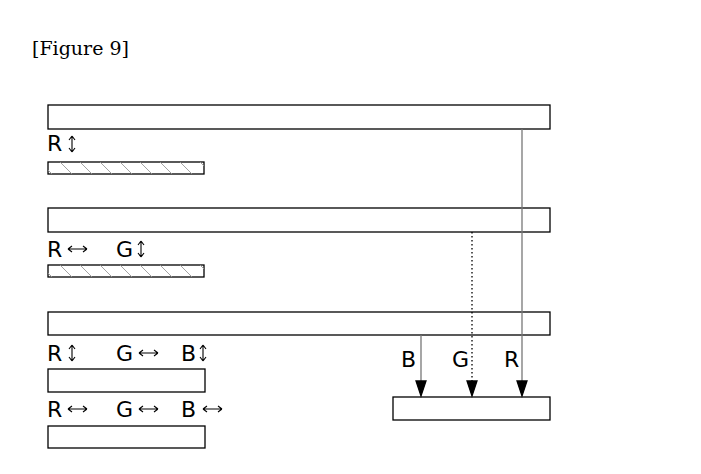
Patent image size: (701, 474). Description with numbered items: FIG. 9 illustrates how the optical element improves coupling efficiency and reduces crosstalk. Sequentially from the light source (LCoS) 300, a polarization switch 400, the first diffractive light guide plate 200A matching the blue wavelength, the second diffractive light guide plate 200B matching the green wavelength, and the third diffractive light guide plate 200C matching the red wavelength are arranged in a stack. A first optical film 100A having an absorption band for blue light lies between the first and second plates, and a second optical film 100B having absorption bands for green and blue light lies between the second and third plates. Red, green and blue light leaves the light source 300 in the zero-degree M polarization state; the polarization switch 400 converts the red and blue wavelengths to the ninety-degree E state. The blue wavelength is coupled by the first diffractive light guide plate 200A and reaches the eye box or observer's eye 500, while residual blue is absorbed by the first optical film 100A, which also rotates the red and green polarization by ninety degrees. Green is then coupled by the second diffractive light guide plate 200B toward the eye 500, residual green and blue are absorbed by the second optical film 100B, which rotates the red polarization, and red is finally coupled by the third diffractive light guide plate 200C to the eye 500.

The third diffractive light guide plate 200C is at (552, 116).
The second diffractive light guide plate 200B is at (552, 219).
The first diffractive light guide plate 200A is at (552, 323).
The second optical film 100B is at (206, 168).
The first optical film 100A is at (206, 271).
The polarization switch 400 is at (207, 380).
The light source (LCoS) 300 is at (207, 437).
The eye box or observer's eye 500 is at (552, 408).